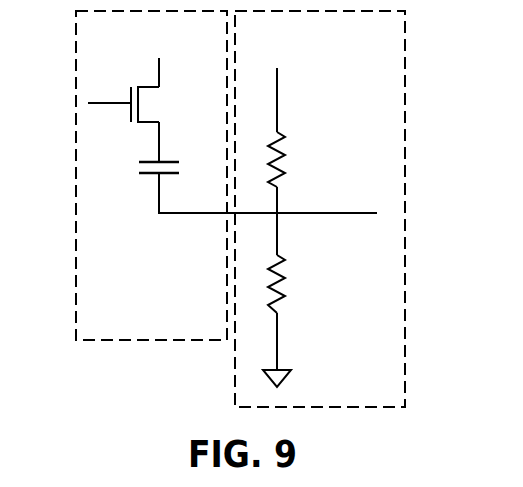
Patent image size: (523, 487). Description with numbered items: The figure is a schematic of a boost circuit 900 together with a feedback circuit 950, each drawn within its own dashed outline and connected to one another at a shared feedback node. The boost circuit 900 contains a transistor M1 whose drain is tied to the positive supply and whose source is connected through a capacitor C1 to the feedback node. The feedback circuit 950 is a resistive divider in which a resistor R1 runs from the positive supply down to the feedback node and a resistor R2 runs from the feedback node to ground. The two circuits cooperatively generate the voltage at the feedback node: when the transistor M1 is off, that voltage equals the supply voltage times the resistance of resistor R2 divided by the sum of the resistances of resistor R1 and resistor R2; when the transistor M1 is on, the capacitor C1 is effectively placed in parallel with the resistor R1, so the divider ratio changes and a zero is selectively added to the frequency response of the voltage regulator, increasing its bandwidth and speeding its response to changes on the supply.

The boost circuit 900 is at (76, 55).
The feedback circuit 950 is at (405, 57).
The transistor M1 is at (123, 91).
The capacitor C1 is at (168, 153).
The resistor R1 is at (294, 159).
The resistor R2 is at (294, 284).